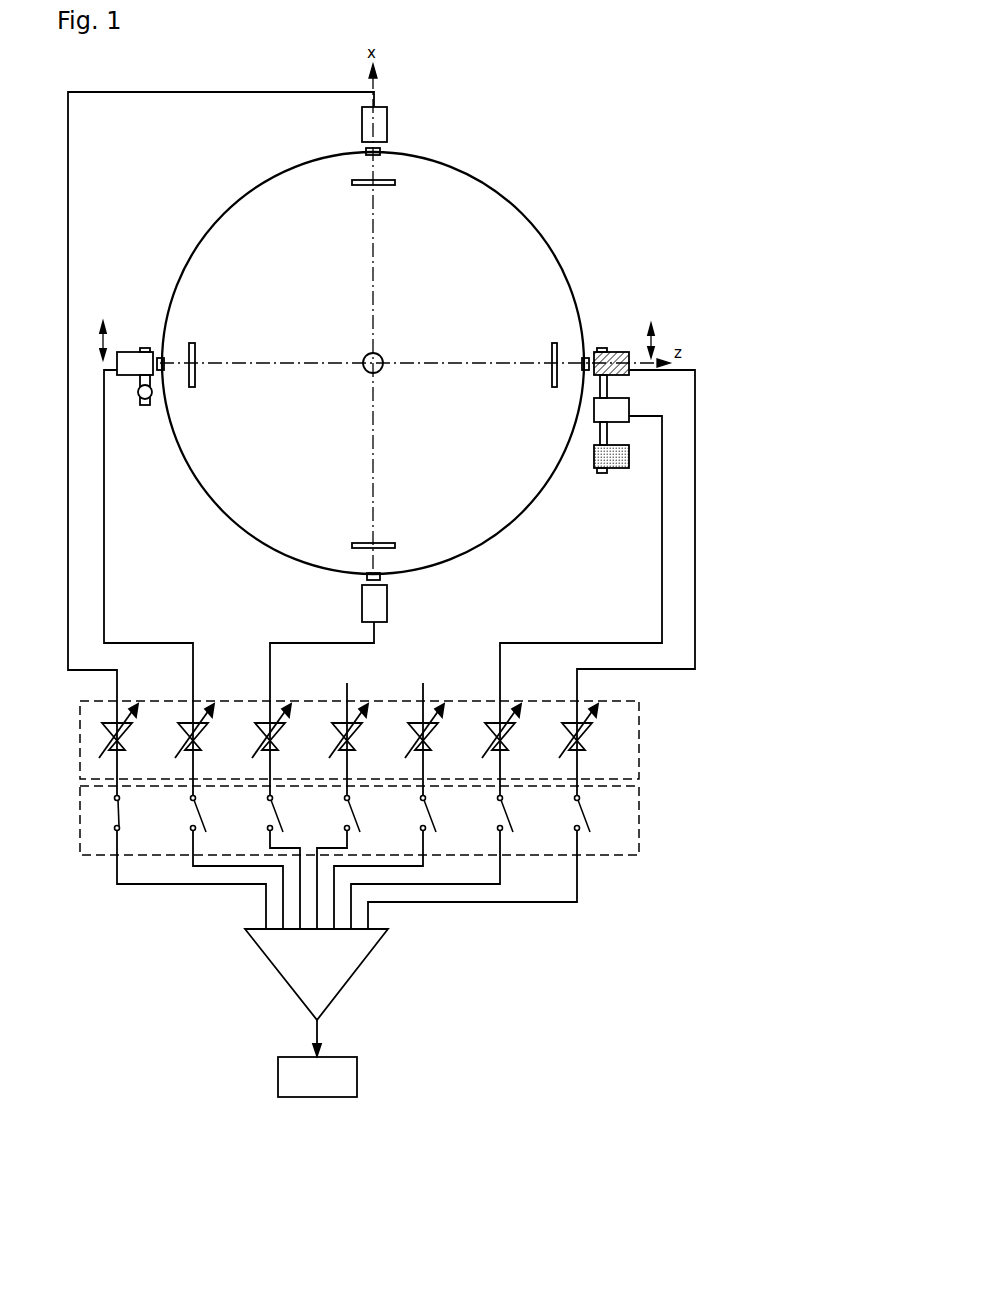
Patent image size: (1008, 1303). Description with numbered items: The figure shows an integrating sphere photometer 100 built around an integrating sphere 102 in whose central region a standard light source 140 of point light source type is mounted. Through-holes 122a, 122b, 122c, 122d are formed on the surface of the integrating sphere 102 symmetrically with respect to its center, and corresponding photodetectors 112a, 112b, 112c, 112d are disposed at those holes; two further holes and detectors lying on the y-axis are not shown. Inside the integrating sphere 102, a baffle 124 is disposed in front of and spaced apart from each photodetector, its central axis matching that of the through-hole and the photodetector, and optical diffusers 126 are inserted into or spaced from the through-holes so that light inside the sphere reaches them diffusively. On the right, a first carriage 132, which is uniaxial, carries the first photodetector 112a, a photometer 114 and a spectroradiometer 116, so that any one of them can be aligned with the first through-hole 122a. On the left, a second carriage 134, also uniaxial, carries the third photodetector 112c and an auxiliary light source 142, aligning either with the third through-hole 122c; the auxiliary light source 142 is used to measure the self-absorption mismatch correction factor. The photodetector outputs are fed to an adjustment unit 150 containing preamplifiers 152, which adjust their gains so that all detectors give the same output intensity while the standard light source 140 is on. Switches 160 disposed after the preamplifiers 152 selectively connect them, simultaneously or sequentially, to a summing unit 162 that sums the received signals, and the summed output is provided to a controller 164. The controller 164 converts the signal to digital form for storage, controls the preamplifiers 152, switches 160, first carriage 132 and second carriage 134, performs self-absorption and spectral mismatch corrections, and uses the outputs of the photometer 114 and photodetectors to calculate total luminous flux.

The integrating sphere photometer 100 is at (646, 80).
The integrating sphere 102 is at (530, 216).
The first photodetector 112a is at (629, 410).
The photodetector 112b is at (387, 124).
The third photodetector 112c is at (140, 352).
The photodetector 112d is at (387, 603).
The photometer 114 is at (612, 352).
The spectroradiometer 116 is at (620, 468).
The first through-hole 122a is at (582, 360).
The through-hole 122b is at (368, 157).
The third through-hole 122c is at (165, 360).
The through-hole 122d is at (380, 572).
The baffle 124 is at (385, 185).
The optical diffuser 126 is at (379, 157).
The first carriage 132 is at (599, 473).
The second carriage 134 is at (146, 405).
The standard light source 140 is at (380, 371).
The auxiliary light source 142 is at (138, 393).
The adjustment unit 150 is at (639, 737).
The preamplifier 152 is at (119, 746).
The switch 160 is at (639, 825).
The summing unit 162 is at (355, 973).
The controller 164 is at (357, 1075).